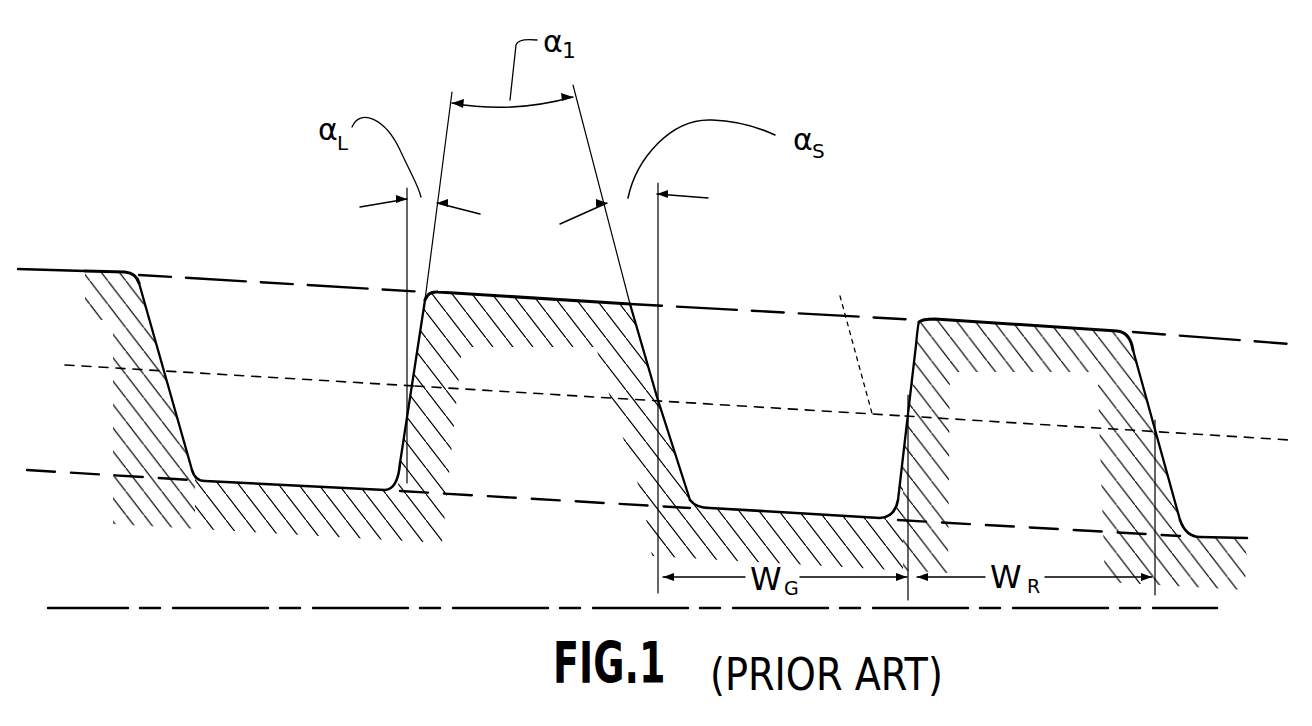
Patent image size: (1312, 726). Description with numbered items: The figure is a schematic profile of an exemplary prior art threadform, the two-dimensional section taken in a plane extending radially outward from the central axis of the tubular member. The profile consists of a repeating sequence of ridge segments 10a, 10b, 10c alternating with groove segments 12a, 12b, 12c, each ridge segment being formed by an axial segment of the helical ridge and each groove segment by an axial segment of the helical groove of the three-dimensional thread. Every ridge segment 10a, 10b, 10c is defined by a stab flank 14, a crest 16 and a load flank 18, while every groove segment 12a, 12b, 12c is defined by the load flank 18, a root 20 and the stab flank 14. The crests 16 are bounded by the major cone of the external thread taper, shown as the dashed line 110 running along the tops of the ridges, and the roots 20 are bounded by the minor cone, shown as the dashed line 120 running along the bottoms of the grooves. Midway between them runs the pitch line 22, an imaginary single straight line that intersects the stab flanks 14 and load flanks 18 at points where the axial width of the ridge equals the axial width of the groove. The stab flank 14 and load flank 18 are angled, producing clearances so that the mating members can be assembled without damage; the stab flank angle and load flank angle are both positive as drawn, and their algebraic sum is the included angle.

The ridge segment 10a is at (1048, 416).
The ridge segment 10b is at (562, 393).
The ridge segment 10c is at (108, 370).
The groove segment 12a is at (1268, 429).
The groove segment 12b is at (832, 403).
The groove segment 12c is at (315, 371).
The stab flank 14 is at (158, 340).
The crest 16 is at (100, 268).
The load flank 18 is at (400, 435).
The root 20 is at (293, 483).
The pitch line 22 is at (843, 338).
The tooth tip line 110 is at (283, 287).
The groove root line 120 is at (548, 500).